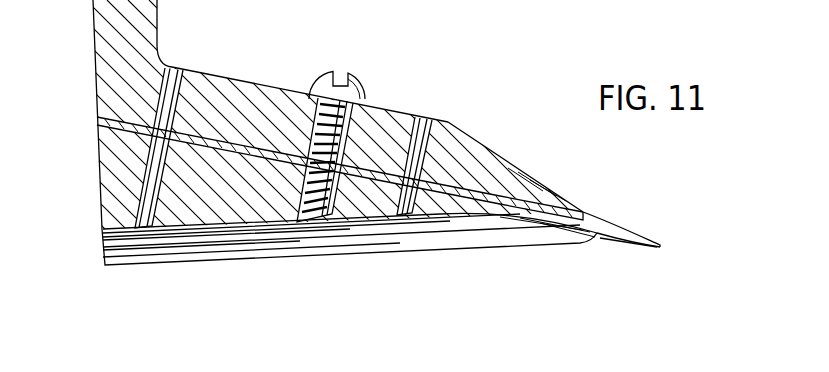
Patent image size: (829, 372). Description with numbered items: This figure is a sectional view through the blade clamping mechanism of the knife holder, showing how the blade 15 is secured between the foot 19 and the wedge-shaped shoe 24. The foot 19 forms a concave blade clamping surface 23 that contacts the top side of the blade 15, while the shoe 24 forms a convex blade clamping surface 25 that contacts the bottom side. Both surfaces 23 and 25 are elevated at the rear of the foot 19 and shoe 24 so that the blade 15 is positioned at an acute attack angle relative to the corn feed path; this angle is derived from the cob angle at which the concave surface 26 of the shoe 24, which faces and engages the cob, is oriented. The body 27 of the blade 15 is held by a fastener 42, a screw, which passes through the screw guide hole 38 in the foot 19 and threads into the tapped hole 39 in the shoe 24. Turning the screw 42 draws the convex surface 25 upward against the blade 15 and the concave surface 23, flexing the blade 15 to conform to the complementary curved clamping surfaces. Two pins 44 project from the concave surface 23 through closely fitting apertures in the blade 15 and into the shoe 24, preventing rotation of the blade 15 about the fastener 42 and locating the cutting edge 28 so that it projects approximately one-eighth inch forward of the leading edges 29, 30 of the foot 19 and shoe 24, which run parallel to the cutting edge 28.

The blade 15 is at (620, 246).
The foot 19 is at (214, 73).
The concave blade clamping surface 23 is at (467, 193).
The wedge-shaped shoe 24 is at (99, 190).
The convex blade clamping surface 25 is at (482, 201).
The concave surface of the shoe 26 is at (120, 257).
The body of the blade 27 is at (270, 150).
The cutting edge 28 is at (625, 228).
The leading edge of the foot 29 is at (523, 200).
The leading edge of the shoe 30 is at (525, 210).
The screw guide hole 38 is at (343, 148).
The tapped hole 39 is at (330, 223).
The fastener 42 is at (352, 84).
The pins 44 is at (145, 233).